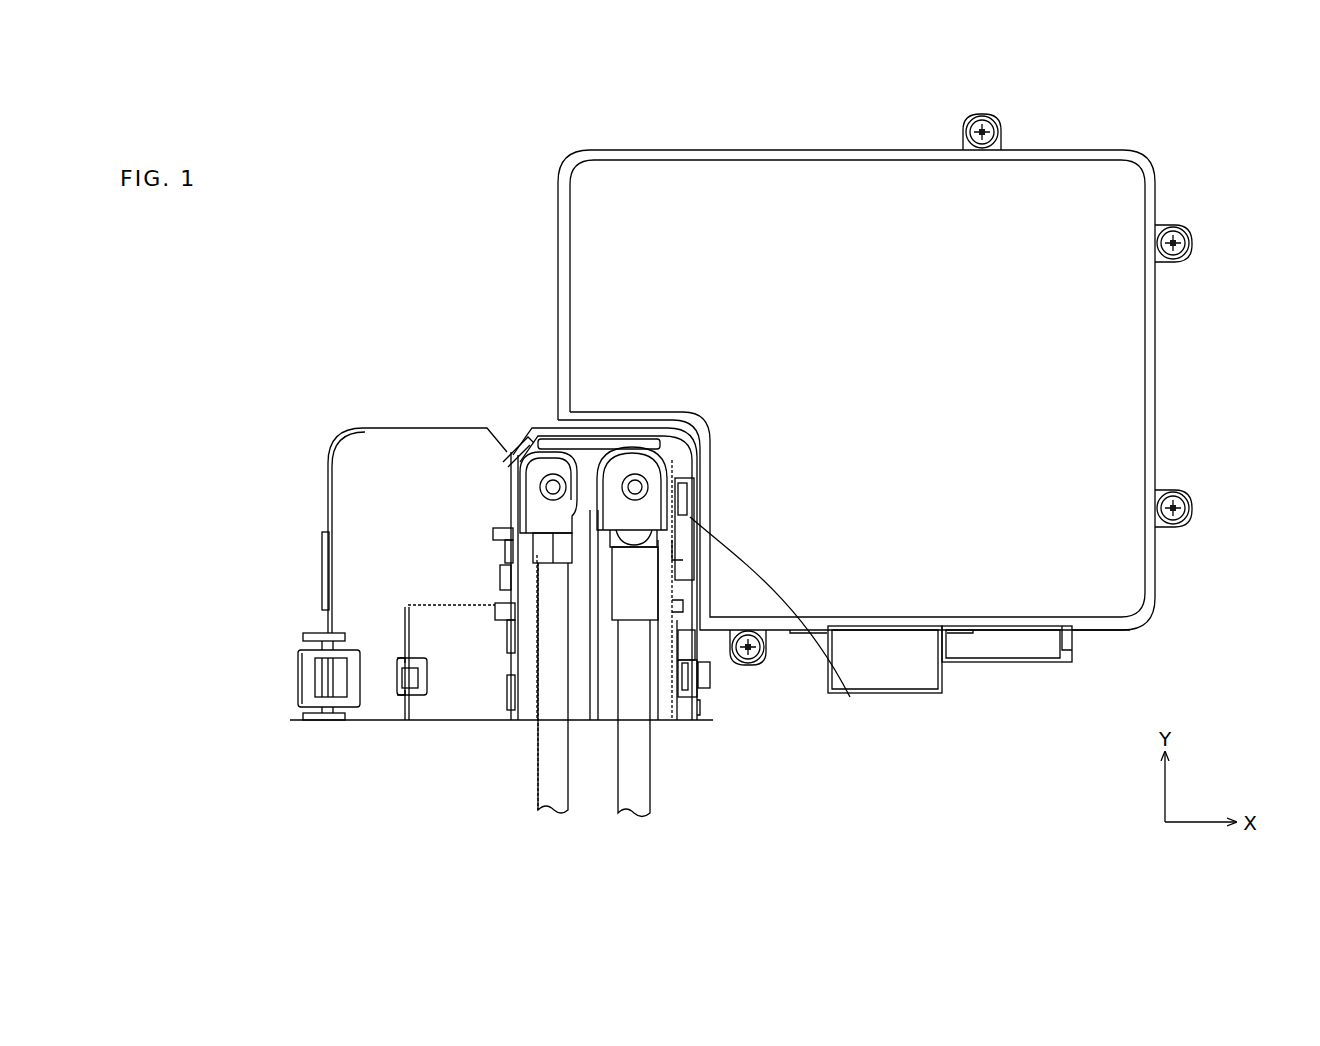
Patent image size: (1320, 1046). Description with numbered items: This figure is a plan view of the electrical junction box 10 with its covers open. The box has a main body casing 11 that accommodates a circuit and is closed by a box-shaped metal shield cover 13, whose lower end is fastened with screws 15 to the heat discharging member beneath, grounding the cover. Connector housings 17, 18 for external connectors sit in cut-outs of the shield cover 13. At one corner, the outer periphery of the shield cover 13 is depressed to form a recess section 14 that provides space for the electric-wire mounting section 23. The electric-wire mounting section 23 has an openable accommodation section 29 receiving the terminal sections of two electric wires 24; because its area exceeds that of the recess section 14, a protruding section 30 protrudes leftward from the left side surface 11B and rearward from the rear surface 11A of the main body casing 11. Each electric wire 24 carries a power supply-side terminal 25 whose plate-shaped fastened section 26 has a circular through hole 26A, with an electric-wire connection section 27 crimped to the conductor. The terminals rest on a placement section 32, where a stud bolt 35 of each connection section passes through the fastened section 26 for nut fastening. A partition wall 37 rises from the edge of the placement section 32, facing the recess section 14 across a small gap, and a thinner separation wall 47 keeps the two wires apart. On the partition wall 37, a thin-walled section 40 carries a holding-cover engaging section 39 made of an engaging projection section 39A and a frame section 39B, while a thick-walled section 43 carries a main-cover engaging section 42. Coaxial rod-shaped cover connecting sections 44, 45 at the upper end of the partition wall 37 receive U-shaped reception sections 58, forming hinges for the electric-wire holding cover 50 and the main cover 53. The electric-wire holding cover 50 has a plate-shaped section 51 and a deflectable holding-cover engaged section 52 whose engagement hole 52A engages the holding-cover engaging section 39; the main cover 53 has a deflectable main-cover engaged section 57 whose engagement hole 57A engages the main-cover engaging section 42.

The electrical junction box 10 is at (522, 113).
The main body casing 11 is at (860, 128).
The rear surface of main body casing 11A is at (775, 633).
The left side surface of main body casing 11B is at (556, 195).
The shield cover 13 is at (1079, 175).
The recess section 14 is at (850, 697).
The screws 15 is at (984, 125).
The connector housing 17 is at (894, 680).
The connector housing 18 is at (1007, 658).
The electric-wire mounting section 23 is at (428, 292).
The electric wires 24 is at (633, 777).
The power supply-side terminal 25 is at (553, 268).
The fastened section 26 is at (607, 462).
The through hole 26A is at (645, 482).
The electric-wire connection section 27 is at (545, 470).
The accommodation section 29 is at (527, 752).
The protruding section 30 is at (698, 720).
The placement section 32 is at (590, 772).
The stud bolt 35 is at (636, 478).
The partition wall 37 is at (693, 626).
The holding-cover engaging section 39 is at (752, 812).
The engaging projection section 39A is at (683, 712).
The frame section 39B is at (695, 712).
The thin-walled section 40 is at (677, 725).
The main-cover engaging section 42 is at (707, 685).
The thick-walled section 43 is at (707, 657).
The cover connecting section 44 is at (503, 690).
The cover connecting section 45 is at (503, 570).
The separation wall 47 is at (592, 660).
The electric-wire holding cover 50 is at (270, 641).
The plate-shaped section 51 is at (410, 652).
The holding-cover engaged section 52 is at (428, 624).
The engagement hole 52A is at (407, 680).
The main cover 53 is at (343, 460).
The main-cover engaged section 57 is at (307, 692).
The engagement hole 57A is at (343, 683).
The reception section 58 is at (495, 538).